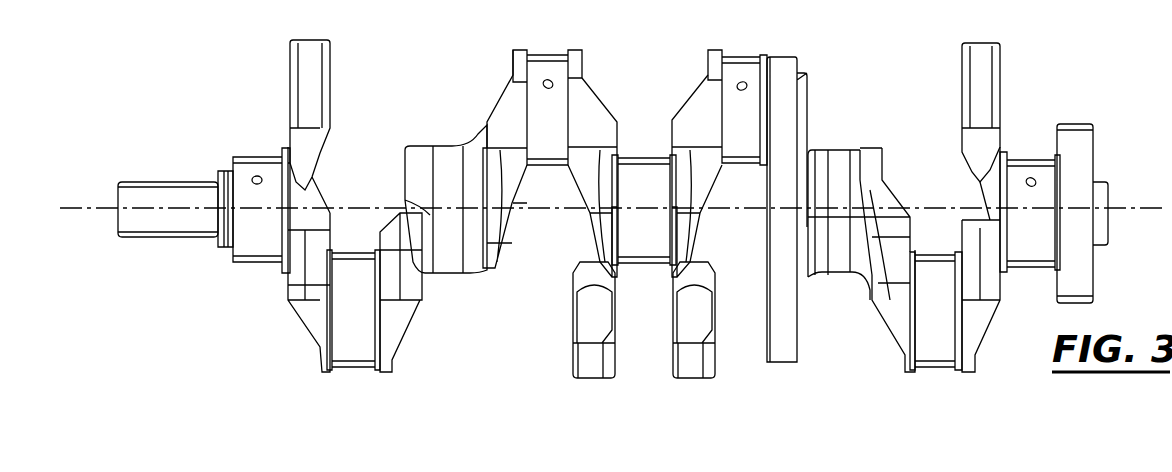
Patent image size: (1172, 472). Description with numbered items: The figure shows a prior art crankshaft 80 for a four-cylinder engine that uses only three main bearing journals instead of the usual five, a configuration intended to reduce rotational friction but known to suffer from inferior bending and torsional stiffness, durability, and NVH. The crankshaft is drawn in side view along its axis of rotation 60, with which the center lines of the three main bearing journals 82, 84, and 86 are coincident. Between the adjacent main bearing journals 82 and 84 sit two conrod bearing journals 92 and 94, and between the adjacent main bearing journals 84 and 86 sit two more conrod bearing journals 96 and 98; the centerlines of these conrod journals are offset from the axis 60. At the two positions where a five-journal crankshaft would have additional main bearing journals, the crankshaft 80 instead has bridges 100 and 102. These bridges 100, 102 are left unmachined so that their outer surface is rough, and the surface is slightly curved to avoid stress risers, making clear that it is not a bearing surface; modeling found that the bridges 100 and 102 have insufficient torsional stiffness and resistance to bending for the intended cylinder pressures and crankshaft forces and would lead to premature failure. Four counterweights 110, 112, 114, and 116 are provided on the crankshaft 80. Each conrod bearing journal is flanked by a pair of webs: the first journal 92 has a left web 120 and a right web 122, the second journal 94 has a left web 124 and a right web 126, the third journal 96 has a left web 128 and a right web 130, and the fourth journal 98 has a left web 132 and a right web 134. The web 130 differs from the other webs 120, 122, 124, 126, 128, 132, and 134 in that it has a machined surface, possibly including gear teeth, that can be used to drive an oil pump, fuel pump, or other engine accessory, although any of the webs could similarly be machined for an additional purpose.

The axis of rotation 60 is at (1148, 207).
The crankshaft 80 is at (247, 72).
The main bearing journal 82 is at (261, 210).
The main bearing journal 84 is at (644, 210).
The main bearing journal 86 is at (1030, 212).
The conrod bearing journal 92 is at (353, 310).
The conrod bearing journal 94 is at (547, 107).
The conrod bearing journal 96 is at (737, 107).
The conrod bearing journal 98 is at (936, 311).
The bridge 100 is at (452, 160).
The bridge 102 is at (843, 165).
The counterweight 110 is at (314, 52).
The counterweight 112 is at (583, 362).
The counterweight 114 is at (700, 364).
The counterweight 116 is at (977, 60).
The web 120 is at (293, 303).
The web 122 is at (397, 310).
The web 124 is at (492, 262).
The web 126 is at (592, 118).
The web 128 is at (690, 118).
The web 130 is at (780, 347).
The web 132 is at (892, 315).
The web 134 is at (985, 315).